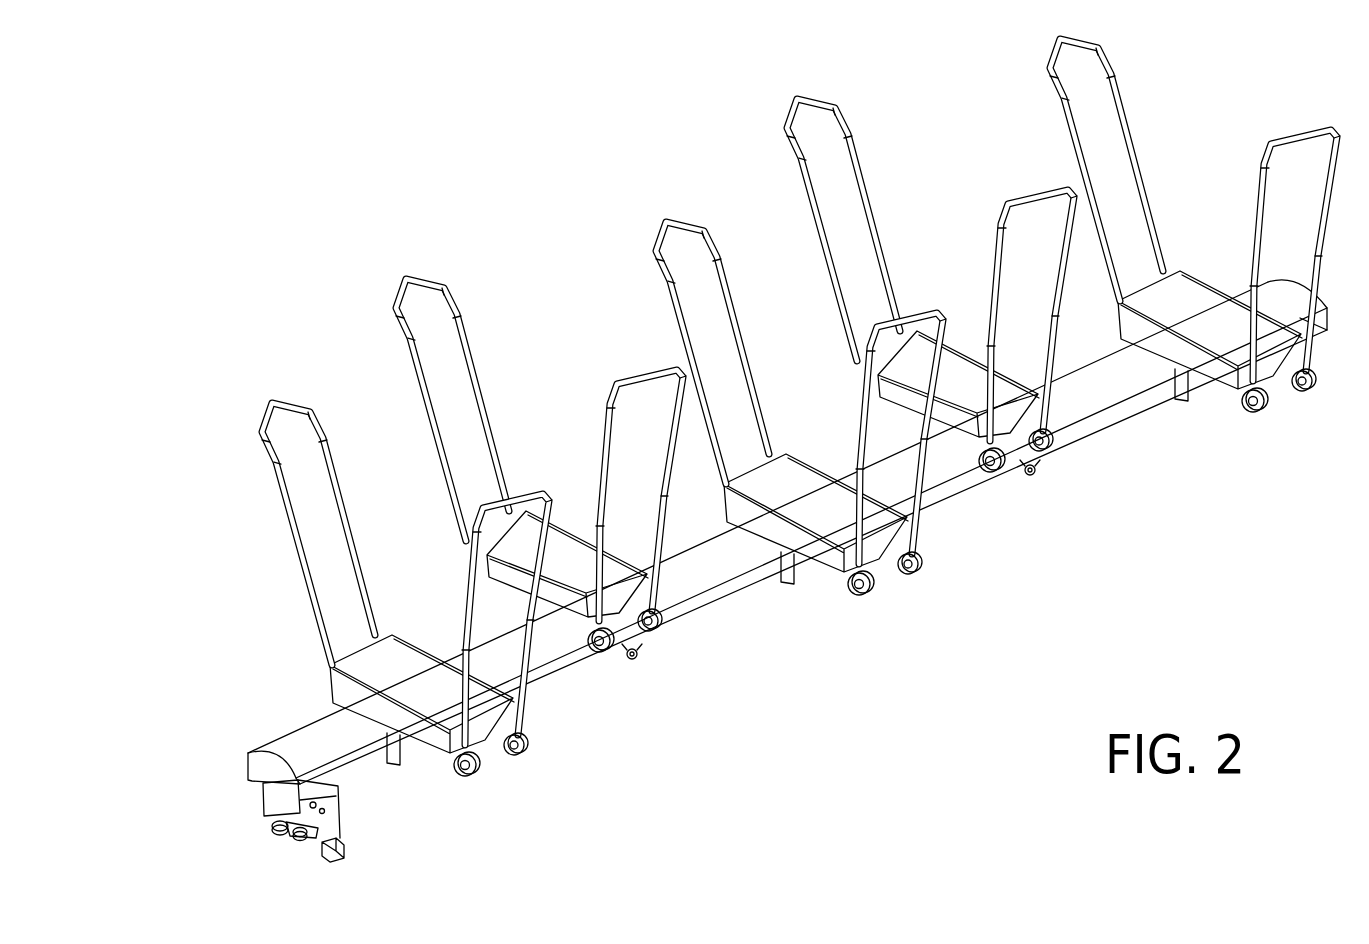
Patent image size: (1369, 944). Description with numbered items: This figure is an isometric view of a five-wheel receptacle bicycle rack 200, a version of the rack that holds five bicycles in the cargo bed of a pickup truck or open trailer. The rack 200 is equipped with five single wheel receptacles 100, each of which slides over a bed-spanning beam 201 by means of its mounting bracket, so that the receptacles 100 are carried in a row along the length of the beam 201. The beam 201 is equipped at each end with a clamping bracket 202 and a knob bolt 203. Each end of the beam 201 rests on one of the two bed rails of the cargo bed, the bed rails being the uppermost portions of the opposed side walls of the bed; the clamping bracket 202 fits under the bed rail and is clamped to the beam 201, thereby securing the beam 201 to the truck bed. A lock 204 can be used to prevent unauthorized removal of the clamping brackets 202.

The single wheel receptacle 100 is at (234, 398).
The five-wheel receptacle bicycle rack 200 is at (622, 72).
The bed-spanning beam 201 is at (710, 605).
The clamping bracket 202 is at (270, 798).
The knob bolt 203 is at (300, 830).
The lock 204 is at (345, 842).